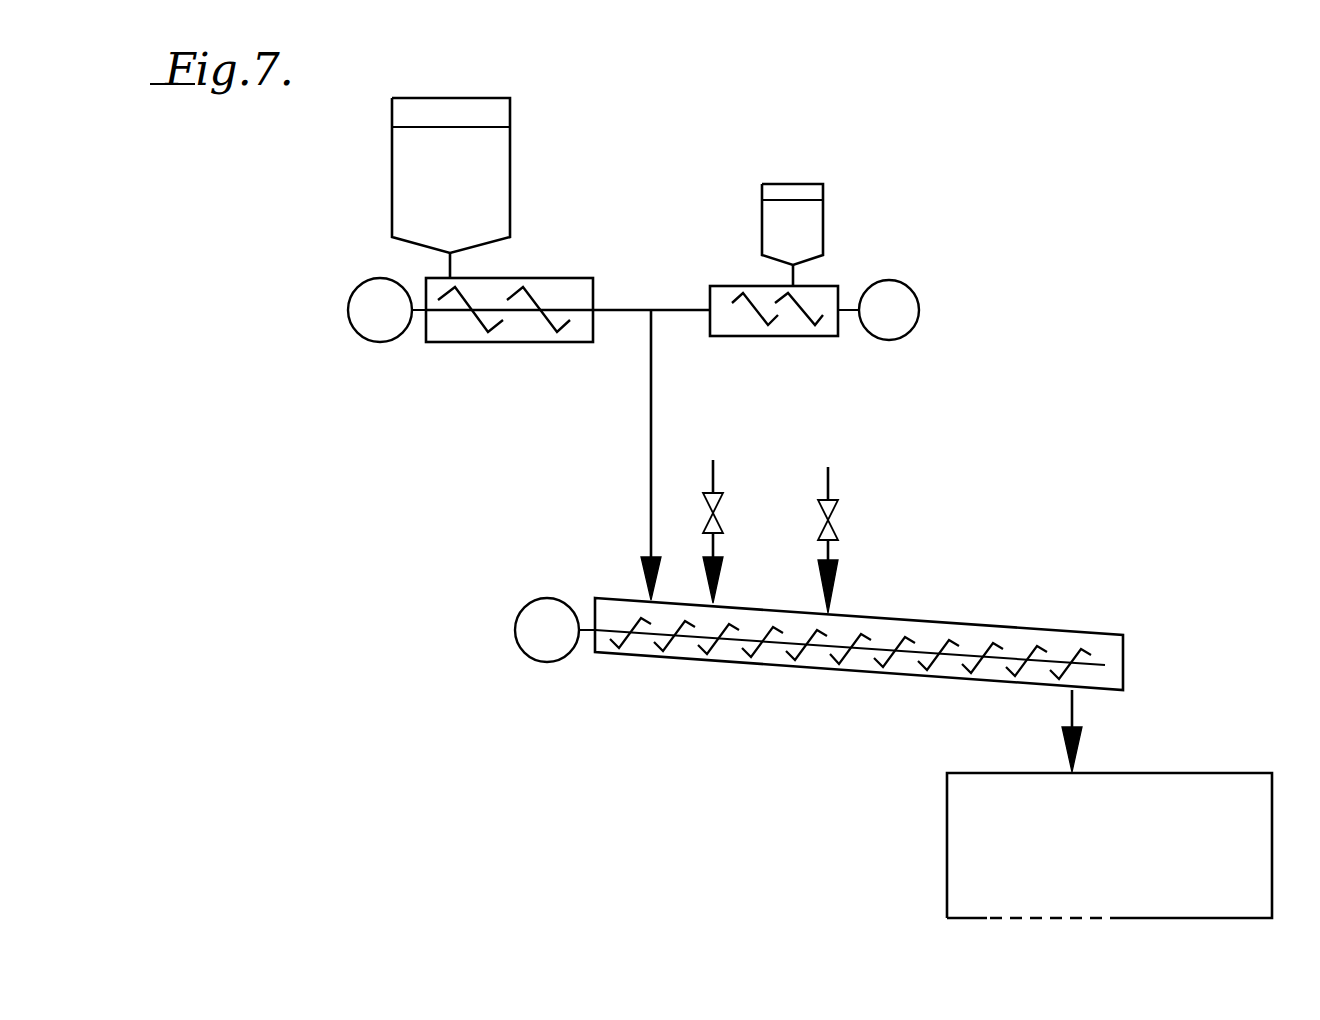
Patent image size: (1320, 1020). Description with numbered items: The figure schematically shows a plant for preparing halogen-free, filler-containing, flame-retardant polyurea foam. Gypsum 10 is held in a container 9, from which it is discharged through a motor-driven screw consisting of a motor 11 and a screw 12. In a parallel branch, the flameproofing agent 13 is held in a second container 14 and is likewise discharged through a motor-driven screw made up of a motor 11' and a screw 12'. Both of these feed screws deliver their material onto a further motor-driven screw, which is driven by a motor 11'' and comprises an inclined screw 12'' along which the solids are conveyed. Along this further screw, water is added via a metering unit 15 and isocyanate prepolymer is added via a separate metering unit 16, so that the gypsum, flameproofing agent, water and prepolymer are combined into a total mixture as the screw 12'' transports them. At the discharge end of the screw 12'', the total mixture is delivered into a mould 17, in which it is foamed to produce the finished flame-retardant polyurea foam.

The container 9 is at (510, 113).
The gypsum 10 is at (478, 185).
The motor 11 is at (382, 334).
The screw 12 is at (509, 339).
The flameproofing agent 13 is at (805, 208).
The container 14 is at (823, 228).
The motor 11' is at (882, 339).
The screw 12' is at (774, 342).
The metering unit 15 is at (720, 500).
The metering unit 16 is at (837, 508).
The motor 11'' is at (549, 658).
The further screw 12'' is at (859, 662).
The mould 17 is at (1197, 788).